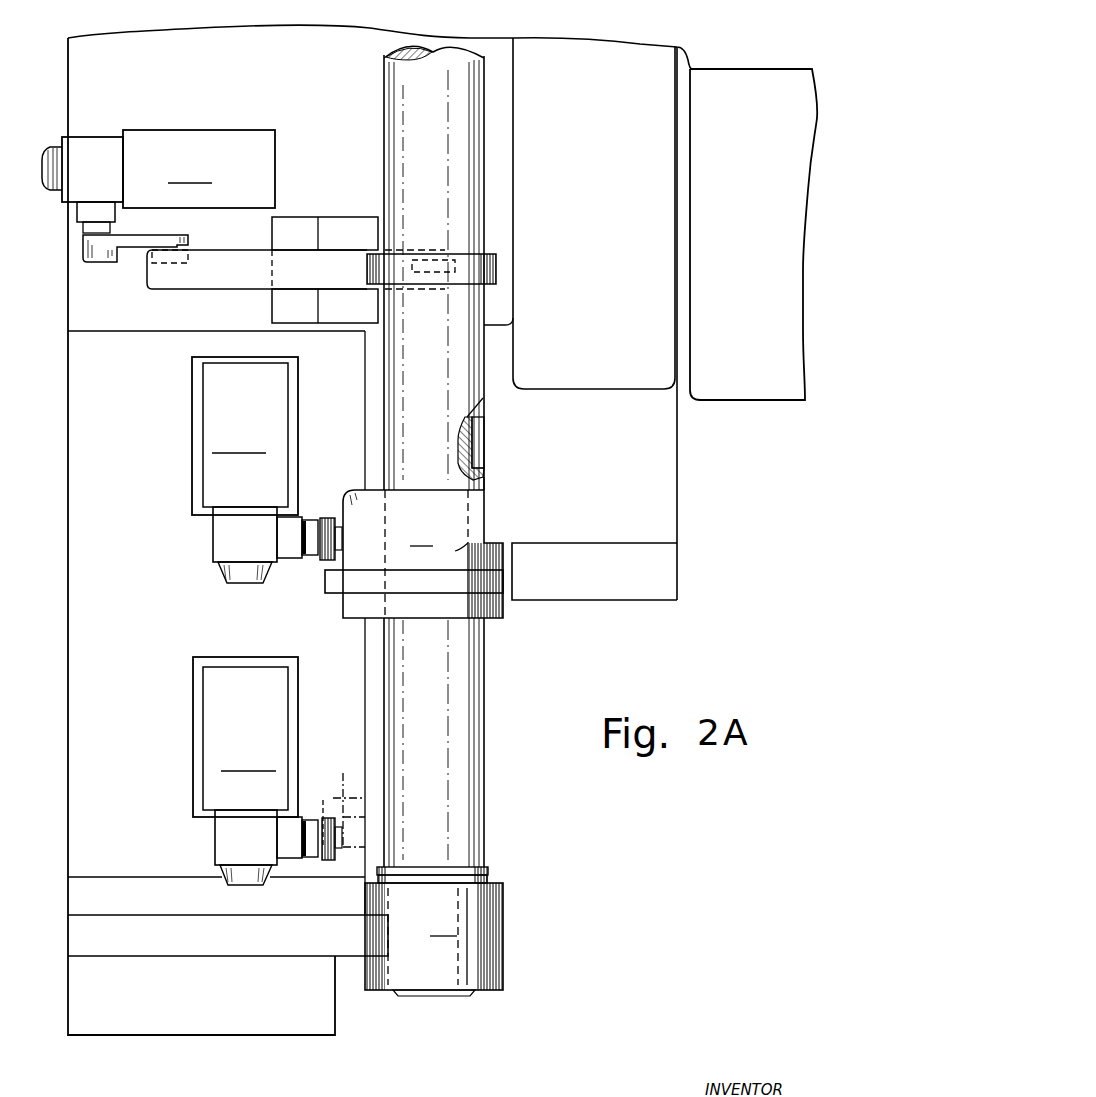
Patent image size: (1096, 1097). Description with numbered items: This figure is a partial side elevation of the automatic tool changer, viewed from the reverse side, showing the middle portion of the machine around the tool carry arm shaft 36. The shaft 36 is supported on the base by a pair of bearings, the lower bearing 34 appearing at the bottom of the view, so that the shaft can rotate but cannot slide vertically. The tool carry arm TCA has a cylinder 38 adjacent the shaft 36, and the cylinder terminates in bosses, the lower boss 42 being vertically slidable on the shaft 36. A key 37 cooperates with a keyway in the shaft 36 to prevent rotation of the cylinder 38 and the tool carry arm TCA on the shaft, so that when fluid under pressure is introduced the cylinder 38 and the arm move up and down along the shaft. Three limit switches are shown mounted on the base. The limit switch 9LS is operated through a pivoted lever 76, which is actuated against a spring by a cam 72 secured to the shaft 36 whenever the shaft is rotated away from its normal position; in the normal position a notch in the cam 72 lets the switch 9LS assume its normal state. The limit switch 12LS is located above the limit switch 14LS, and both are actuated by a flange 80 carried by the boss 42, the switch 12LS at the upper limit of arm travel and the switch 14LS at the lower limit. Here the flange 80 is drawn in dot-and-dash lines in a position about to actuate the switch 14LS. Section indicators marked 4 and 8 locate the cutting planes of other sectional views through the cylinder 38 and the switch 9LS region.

The section line 4- 4 is at (585, 28).
The section line 8- 8 is at (88, 110).
The limit switch 9LS is at (158, 196).
The limit switch 12LS is at (267, 470).
The limit switch 14LS is at (267, 771).
The bearing 34 is at (434, 939).
The tool carry arm shaft 36 is at (410, 127).
The key 37 is at (480, 438).
The cylinder 38 is at (587, 373).
The lower boss 42 is at (423, 554).
The cam 72 is at (398, 270).
The pivoted lever 76 is at (208, 283).
The flange 80 is at (327, 582).
The tool carry arm TCA is at (686, 270).